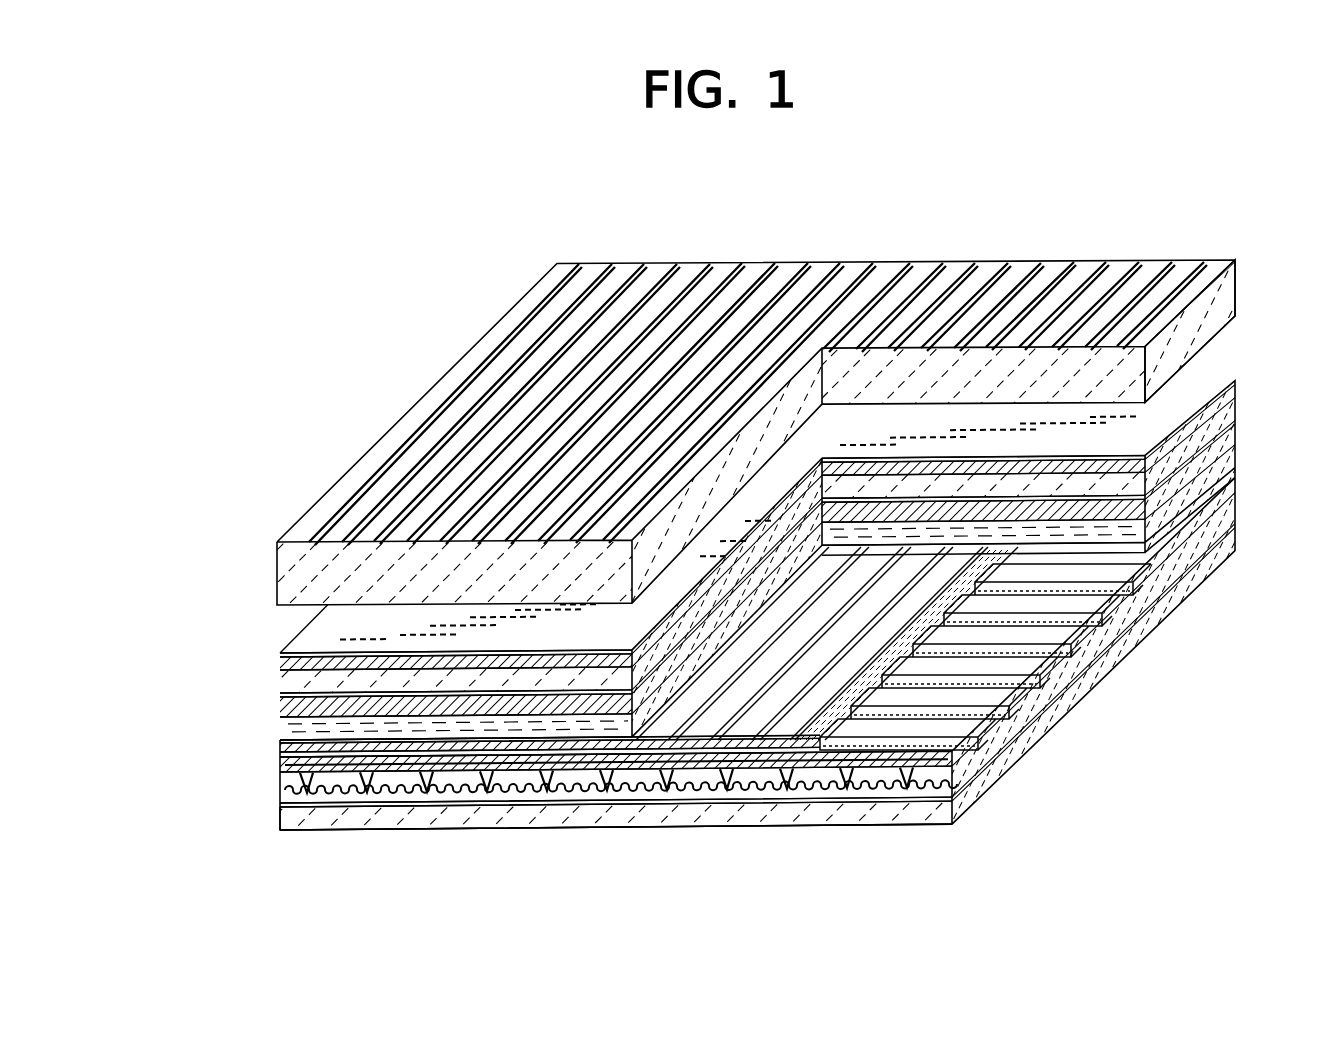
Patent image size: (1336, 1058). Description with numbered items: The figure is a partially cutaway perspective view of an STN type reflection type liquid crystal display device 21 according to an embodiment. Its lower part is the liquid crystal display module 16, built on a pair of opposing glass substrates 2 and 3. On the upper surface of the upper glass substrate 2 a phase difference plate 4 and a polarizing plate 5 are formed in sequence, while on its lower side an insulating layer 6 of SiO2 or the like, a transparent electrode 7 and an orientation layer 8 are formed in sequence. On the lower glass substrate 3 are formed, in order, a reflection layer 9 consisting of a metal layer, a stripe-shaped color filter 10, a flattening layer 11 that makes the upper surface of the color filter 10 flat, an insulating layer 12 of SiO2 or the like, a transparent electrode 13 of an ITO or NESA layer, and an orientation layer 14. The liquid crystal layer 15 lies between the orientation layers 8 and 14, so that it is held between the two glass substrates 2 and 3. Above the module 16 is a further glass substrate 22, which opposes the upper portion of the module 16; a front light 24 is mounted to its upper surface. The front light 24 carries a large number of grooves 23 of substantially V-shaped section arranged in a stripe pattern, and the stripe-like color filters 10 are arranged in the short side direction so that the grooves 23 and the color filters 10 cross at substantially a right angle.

The reflection type liquid crystal display device 21 is at (668, 452).
The glass substrate 22 is at (1222, 297).
The grooves 23 is at (988, 272).
The front light 24 is at (1158, 250).
The liquid crystal display module 16 is at (668, 454).
The polarizing plate 5 is at (282, 655).
The phase difference plate 4 is at (282, 662).
The glass substrate 2 is at (282, 680).
The insulating layer 6 is at (282, 695).
The transparent electrode 7 is at (282, 707).
The orientation layer 8 is at (282, 725).
The liquid crystal layer 15 is at (282, 740).
The orientation layer 14 is at (282, 747).
The transparent electrode 13 is at (282, 755).
The insulating layer 12 is at (282, 765).
The flattening layer 11 is at (282, 790).
The color filter 10 is at (282, 808).
The reflection layer 9 is at (282, 822).
The glass substrate 3 is at (594, 845).